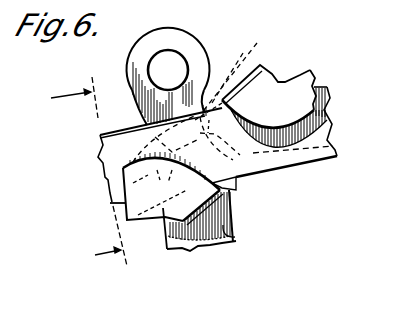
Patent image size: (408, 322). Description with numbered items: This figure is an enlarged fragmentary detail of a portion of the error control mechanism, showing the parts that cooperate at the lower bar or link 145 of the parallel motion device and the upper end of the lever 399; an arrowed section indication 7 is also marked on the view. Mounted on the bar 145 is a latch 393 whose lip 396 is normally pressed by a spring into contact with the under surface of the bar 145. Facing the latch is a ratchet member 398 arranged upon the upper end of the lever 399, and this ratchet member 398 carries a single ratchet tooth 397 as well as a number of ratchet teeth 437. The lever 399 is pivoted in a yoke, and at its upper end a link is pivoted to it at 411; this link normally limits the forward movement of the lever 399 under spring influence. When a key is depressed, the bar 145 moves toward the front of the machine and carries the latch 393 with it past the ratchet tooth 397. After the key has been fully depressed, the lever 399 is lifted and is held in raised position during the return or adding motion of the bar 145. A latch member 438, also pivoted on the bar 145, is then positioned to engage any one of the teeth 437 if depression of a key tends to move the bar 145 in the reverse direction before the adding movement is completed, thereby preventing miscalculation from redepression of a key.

The section line 7- 7 is at (79, 176).
The bottom bar or link 145 is at (103, 158).
The latch 393 is at (161, 201).
The lip 396 is at (236, 190).
The ratchet tooth 397 is at (198, 236).
The ratchet member 398 is at (336, 150).
The lever 399 is at (238, 236).
The pivot 411 is at (182, 64).
The ratchet teeth 437 is at (274, 83).
The latch member 438 is at (298, 90).